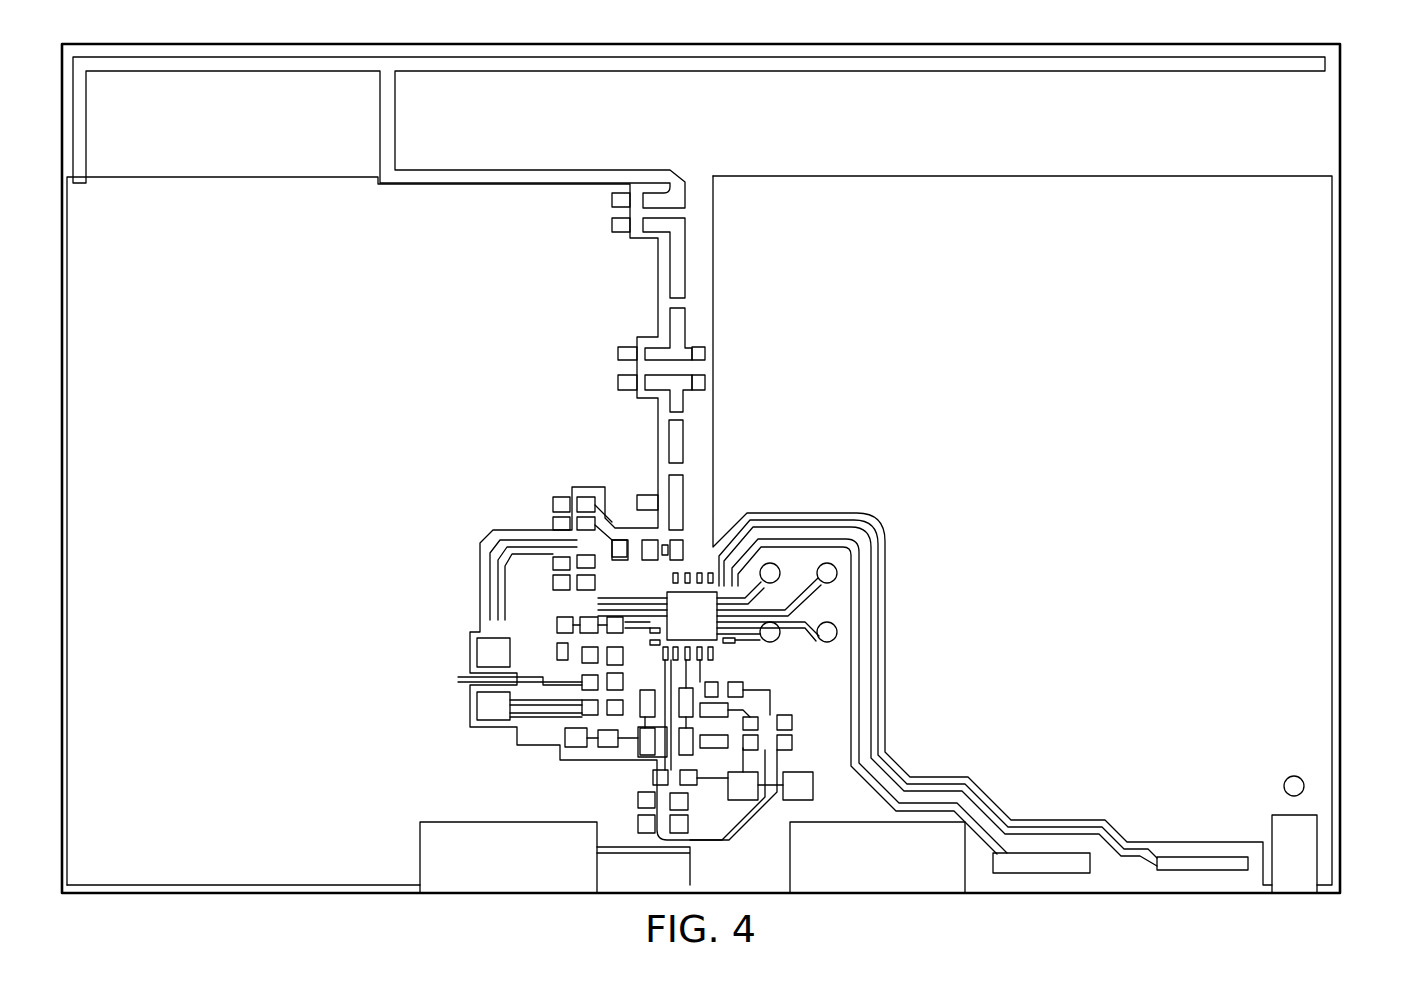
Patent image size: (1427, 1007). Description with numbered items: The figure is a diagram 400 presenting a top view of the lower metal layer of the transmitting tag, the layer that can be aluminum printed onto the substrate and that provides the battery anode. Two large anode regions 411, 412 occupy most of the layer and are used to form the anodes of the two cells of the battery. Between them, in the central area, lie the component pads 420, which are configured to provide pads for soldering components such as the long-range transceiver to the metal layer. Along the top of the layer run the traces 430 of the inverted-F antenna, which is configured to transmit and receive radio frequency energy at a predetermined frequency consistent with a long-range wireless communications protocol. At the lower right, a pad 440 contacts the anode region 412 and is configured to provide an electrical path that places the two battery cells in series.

The diagram 400 is at (1137, 900).
The anode region 411 is at (264, 860).
The anode region 412 is at (1310, 736).
The component pads 420 is at (686, 512).
The traces 430 is at (406, 124).
The pad 440 is at (1295, 876).